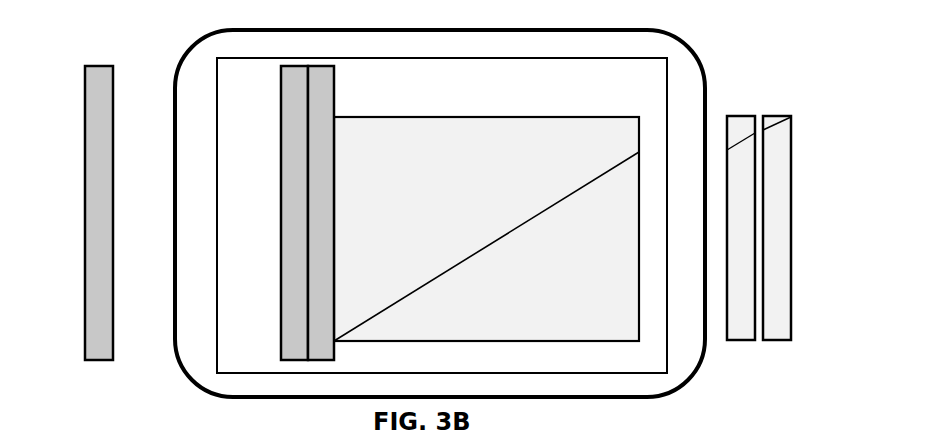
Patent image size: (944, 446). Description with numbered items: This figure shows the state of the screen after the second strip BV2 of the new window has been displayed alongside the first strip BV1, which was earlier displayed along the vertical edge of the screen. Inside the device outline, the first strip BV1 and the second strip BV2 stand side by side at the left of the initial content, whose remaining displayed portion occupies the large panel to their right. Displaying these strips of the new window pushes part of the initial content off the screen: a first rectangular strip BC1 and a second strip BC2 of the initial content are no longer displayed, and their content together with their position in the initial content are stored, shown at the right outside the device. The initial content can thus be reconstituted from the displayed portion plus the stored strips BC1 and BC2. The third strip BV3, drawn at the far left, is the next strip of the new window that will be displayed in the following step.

The first strip BV1 is at (317, 78).
The second strip BV2 is at (293, 124).
The third strip BV3 is at (93, 141).
The rectangular strip of the initial content BC1 is at (782, 303).
The second strip of the initial content BC2 is at (739, 125).